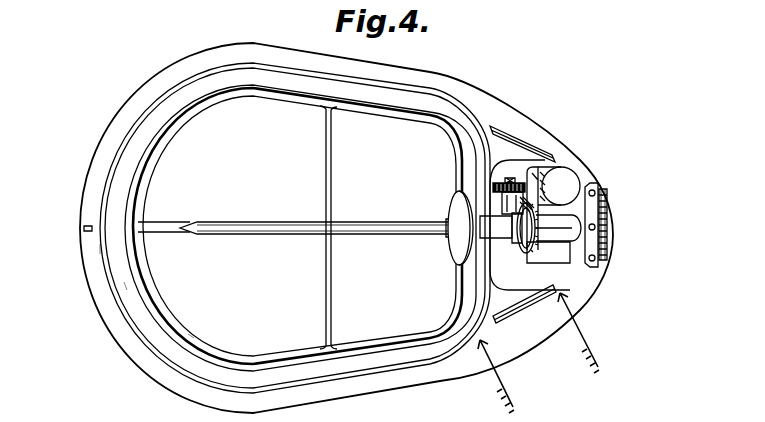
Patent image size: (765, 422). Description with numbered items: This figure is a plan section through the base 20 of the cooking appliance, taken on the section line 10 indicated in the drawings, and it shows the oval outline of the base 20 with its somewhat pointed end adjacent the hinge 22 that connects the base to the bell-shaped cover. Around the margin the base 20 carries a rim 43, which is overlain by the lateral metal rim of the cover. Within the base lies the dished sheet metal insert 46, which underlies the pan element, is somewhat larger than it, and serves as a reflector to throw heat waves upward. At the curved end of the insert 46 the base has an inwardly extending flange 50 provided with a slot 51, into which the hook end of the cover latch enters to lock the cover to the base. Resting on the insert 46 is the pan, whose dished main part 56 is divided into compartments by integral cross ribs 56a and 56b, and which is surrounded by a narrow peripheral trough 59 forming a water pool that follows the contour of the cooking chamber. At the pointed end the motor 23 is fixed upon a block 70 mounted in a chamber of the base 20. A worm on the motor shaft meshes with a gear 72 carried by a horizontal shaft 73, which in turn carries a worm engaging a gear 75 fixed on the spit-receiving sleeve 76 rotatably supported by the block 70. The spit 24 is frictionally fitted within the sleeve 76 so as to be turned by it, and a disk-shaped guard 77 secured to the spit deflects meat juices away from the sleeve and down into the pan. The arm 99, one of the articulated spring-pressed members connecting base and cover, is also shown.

The direction arrows 10 is at (546, 353).
The base 20 is at (436, 70).
The hinge 22 is at (610, 227).
The motor 23 is at (571, 180).
The spit 24 is at (276, 225).
The rim 43 is at (302, 58).
The insert 46 is at (122, 285).
The flange 50 is at (93, 249).
The slot 51 is at (85, 224).
The dished main part 56 is at (262, 141).
The cross rib 56a is at (332, 178).
The cross rib 56b is at (156, 227).
The trough 59 is at (190, 333).
The block 70 is at (584, 267).
The gear 72 is at (493, 186).
The shaft 73 is at (513, 180).
The gear 75 is at (562, 252).
The spit-receiving sleeve 76 is at (500, 232).
The guard 77 is at (455, 247).
The arm 99 is at (541, 152).